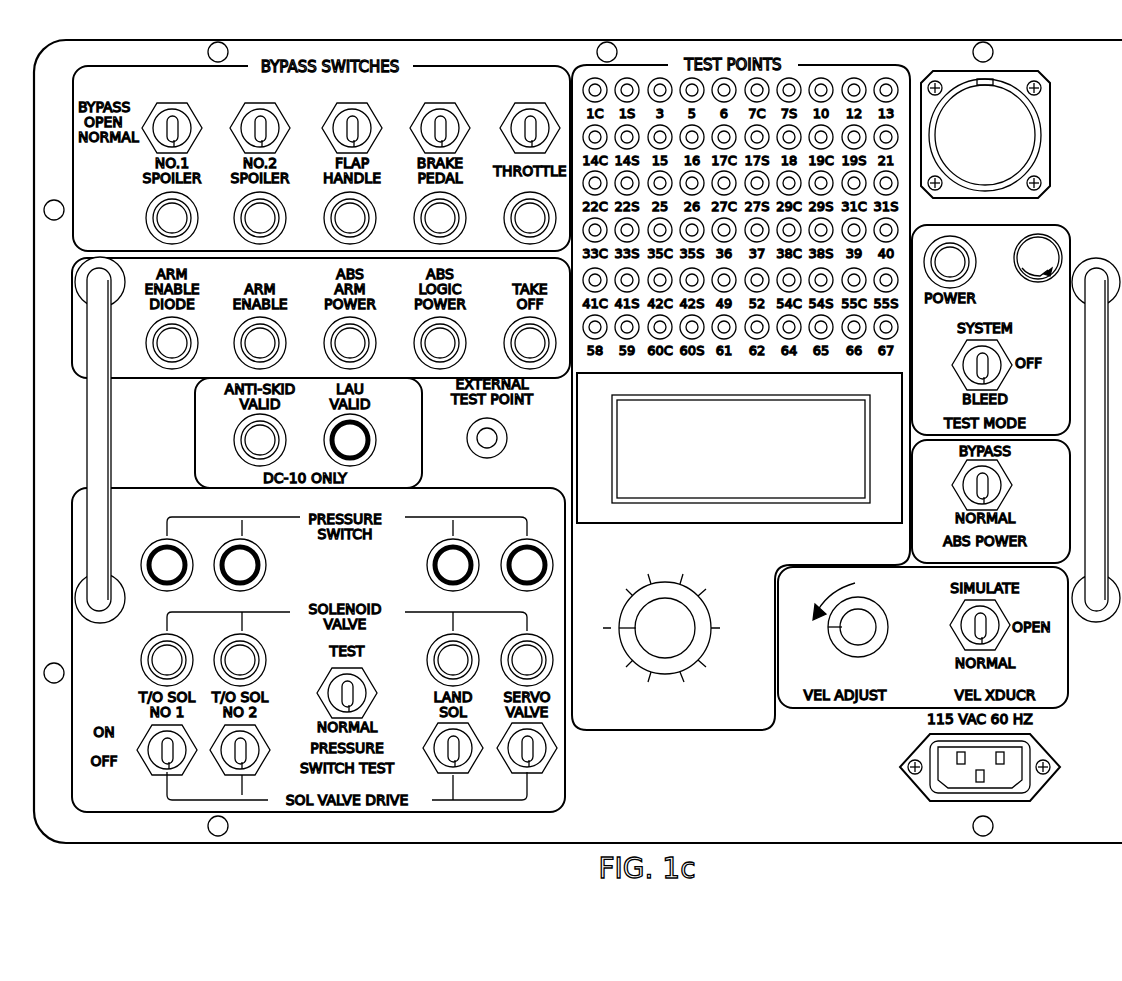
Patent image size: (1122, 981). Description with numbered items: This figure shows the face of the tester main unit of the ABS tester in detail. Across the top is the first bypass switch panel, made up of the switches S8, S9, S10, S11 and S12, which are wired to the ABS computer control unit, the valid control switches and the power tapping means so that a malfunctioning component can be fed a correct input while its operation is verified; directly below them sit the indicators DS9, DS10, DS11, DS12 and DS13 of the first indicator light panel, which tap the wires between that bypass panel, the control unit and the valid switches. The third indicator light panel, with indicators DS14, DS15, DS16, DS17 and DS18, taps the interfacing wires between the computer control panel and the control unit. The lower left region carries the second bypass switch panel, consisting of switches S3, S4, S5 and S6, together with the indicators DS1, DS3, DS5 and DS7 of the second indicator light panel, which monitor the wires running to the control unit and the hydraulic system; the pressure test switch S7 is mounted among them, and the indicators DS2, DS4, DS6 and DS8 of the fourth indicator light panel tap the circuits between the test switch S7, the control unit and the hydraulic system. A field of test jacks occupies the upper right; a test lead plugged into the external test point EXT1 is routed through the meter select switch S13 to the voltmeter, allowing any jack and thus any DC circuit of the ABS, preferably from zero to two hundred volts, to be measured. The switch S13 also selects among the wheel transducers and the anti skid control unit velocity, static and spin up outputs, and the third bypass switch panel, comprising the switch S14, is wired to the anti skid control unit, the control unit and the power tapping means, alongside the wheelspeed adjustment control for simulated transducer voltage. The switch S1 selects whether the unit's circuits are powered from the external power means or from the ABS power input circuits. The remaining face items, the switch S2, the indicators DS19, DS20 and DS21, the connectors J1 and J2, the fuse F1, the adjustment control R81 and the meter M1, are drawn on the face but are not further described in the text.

The power selection switch S1 is at (968, 365).
The ABS power bypass/normal toggle switch S2 is at (971, 485).
The second bypass panel switch S3 is at (167, 760).
The second bypass panel switch S4 is at (240, 760).
The second bypass panel switch S5 is at (453, 759).
The second bypass panel switch S6 is at (527, 759).
The pressure test switch S7 is at (338, 693).
The first bypass panel switch S8 is at (530, 120).
The first bypass panel switch S9 is at (440, 120).
The first bypass panel switch S10 is at (352, 120).
The first bypass panel switch S11 is at (260, 120).
The first bypass panel switch S12 is at (172, 120).
The meter select switch S13 is at (663, 643).
The third bypass panel switch S14 is at (965, 625).
The second indicator panel indicator DS1 is at (161, 653).
The fourth indicator panel indicator DS2 is at (161, 558).
The second indicator panel indicator DS3 is at (236, 653).
The fourth indicator panel indicator DS4 is at (236, 558).
The second indicator panel indicator DS5 is at (448, 653).
The fourth indicator panel indicator DS6 is at (448, 558).
The second indicator panel indicator DS7 is at (518, 653).
The fourth indicator panel indicator DS8 is at (522, 558).
The first indicator panel indicator DS9 is at (520, 220).
The first indicator panel indicator DS10 is at (426, 220).
The first indicator panel indicator DS11 is at (336, 220).
The first indicator panel indicator DS12 is at (246, 220).
The first indicator panel indicator DS13 is at (158, 220).
The third indicator panel indicator DS14 is at (158, 345).
The third indicator panel indicator DS15 is at (246, 345).
The third indicator panel indicator DS16 is at (336, 345).
The third indicator panel indicator DS17 is at (426, 345).
The third indicator panel indicator DS18 is at (516, 345).
The anti-skid valid indicator lamp DS19 is at (247, 441).
The LAU valid indicator lamp DS20 is at (365, 441).
The power indicator lamp DS21 is at (966, 262).
The circular connector J1 is at (985, 144).
The 115 VAC power connector J2 is at (980, 779).
The 3A fuse F1 is at (1037, 265).
The velocity adjust potentiometer R81 is at (839, 620).
The digital voltmeter M1 is at (739, 459).
The external test point EXT1 is at (507, 442).